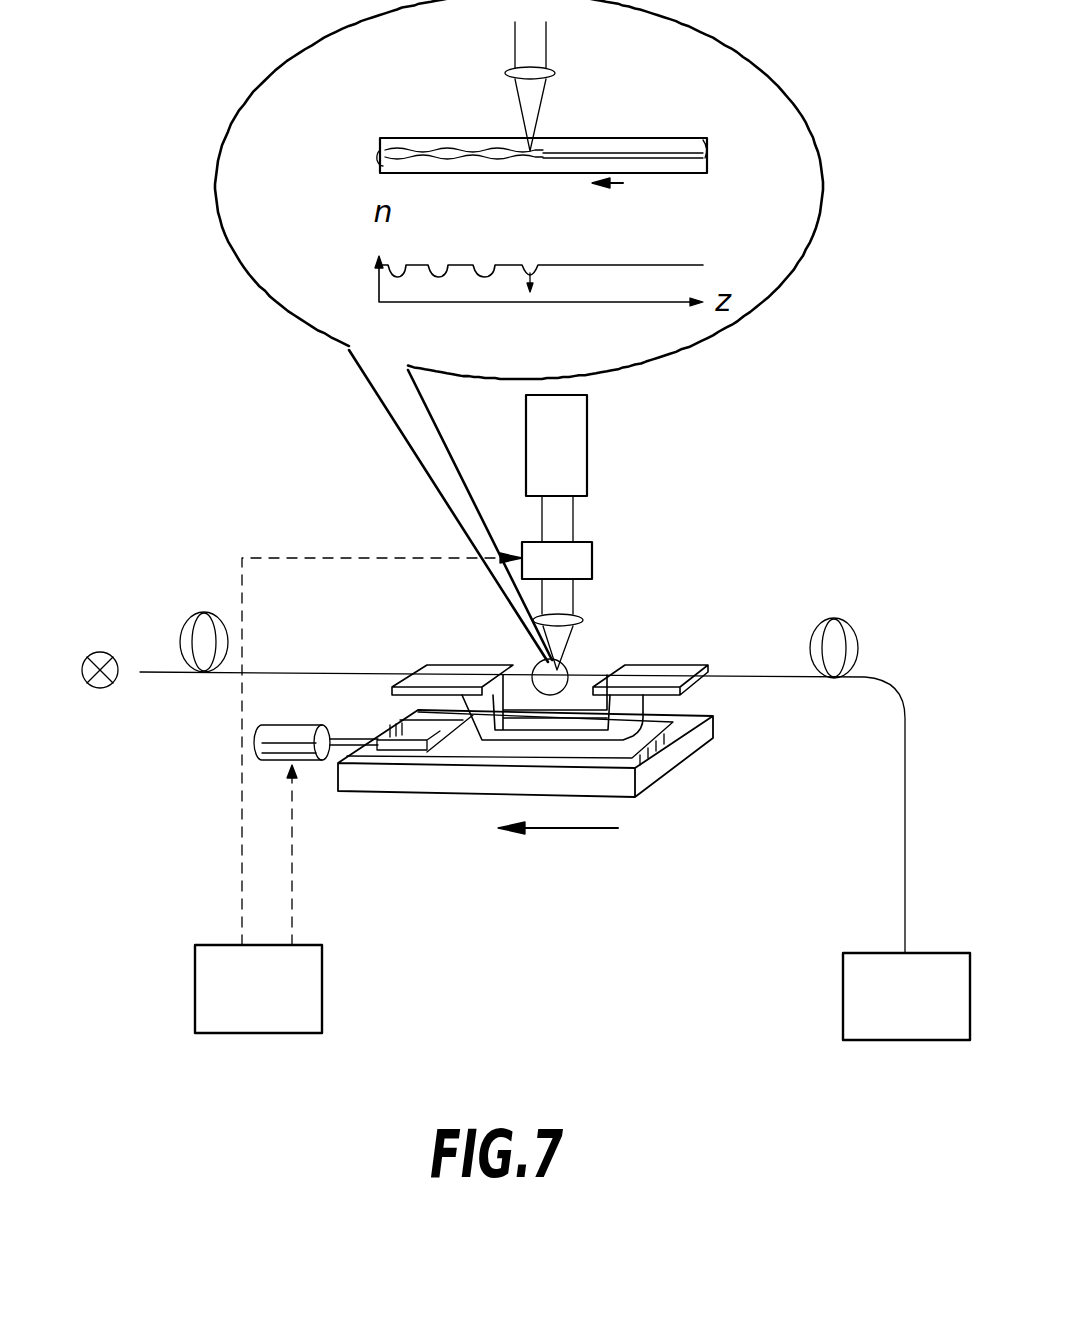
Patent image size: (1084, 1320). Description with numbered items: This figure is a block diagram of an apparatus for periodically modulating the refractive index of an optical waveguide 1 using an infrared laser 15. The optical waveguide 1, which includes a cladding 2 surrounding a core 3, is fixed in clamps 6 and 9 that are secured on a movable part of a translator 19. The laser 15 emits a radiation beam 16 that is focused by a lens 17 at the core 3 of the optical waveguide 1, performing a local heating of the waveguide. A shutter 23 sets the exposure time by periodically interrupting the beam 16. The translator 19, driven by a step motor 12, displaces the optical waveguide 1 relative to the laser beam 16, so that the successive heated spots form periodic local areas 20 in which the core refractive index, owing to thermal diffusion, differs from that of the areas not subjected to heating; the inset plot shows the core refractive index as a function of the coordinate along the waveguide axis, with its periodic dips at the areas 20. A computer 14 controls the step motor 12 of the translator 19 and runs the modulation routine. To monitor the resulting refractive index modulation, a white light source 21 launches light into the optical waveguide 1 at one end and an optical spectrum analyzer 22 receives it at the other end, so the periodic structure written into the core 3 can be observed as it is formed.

The optical waveguide 1 is at (713, 140).
The cladding 2 is at (658, 145).
The core 3 is at (622, 150).
The clamp 6 is at (450, 668).
The clamp 9 is at (668, 668).
The step motor 12 is at (275, 733).
The computer 14 is at (358, 793).
The infrared laser 15 is at (556, 445).
The laser radiation beam 16 is at (541, 46).
The lens 17 is at (552, 70).
The translator 19 is at (430, 780).
The periodic local areas 20 is at (488, 150).
The white light source 21 is at (103, 652).
The optical spectrum analyzer 22 is at (906, 996).
The shutter 23 is at (575, 560).